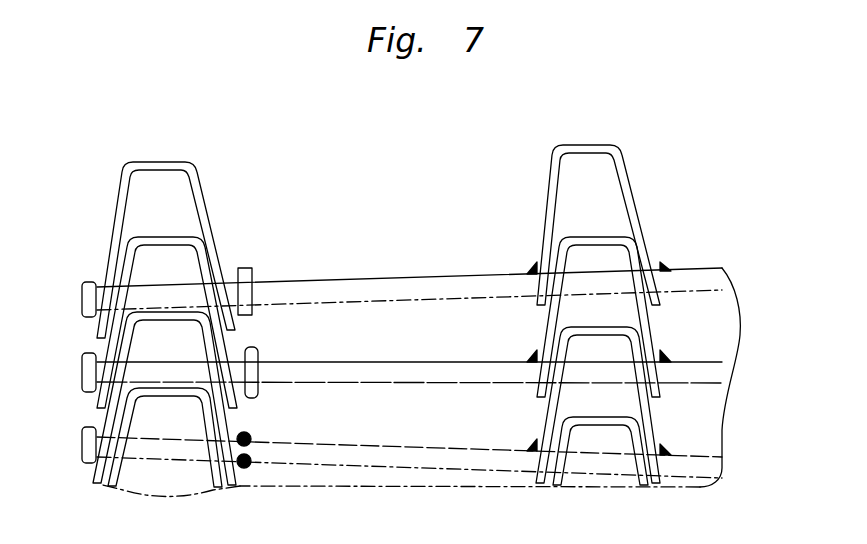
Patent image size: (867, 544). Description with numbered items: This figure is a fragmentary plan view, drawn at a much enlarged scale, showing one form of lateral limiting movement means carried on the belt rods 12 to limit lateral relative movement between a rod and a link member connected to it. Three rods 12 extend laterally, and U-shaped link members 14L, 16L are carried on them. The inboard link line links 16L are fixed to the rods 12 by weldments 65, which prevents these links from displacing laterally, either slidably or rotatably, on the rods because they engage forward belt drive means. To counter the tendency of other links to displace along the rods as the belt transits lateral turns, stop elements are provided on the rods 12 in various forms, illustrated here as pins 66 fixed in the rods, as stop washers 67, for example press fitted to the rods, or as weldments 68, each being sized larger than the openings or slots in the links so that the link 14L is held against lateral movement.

The rods 12 is at (692, 273).
The left support bracket 14L is at (200, 170).
The links 16L is at (635, 173).
The weldments 65 is at (533, 267).
The pins 66 is at (250, 268).
The stop washers 67 is at (258, 352).
The weldments 68 is at (250, 437).